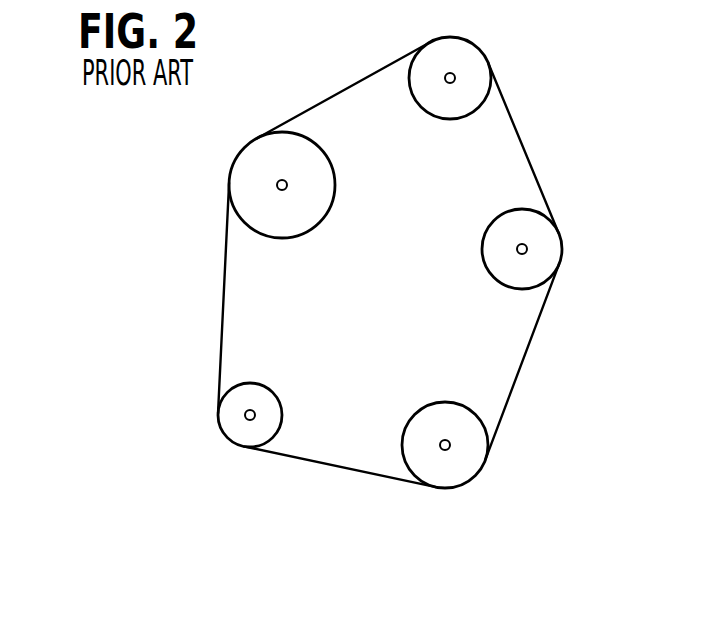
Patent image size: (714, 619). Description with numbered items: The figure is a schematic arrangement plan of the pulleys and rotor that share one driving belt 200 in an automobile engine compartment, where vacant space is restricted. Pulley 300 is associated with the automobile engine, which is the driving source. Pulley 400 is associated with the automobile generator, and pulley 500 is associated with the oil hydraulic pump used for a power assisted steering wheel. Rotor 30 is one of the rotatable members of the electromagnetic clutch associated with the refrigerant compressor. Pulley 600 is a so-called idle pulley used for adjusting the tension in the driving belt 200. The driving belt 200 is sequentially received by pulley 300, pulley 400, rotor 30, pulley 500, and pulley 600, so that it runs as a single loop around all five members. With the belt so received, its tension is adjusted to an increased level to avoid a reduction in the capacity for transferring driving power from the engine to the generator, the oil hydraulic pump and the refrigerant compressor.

The driving belt 200 is at (348, 84).
The pulley 400 is at (477, 66).
The rotor 30 is at (552, 240).
The pulley 500 is at (468, 466).
The idle pulley 600 is at (245, 440).
The pulley 300 is at (234, 196).